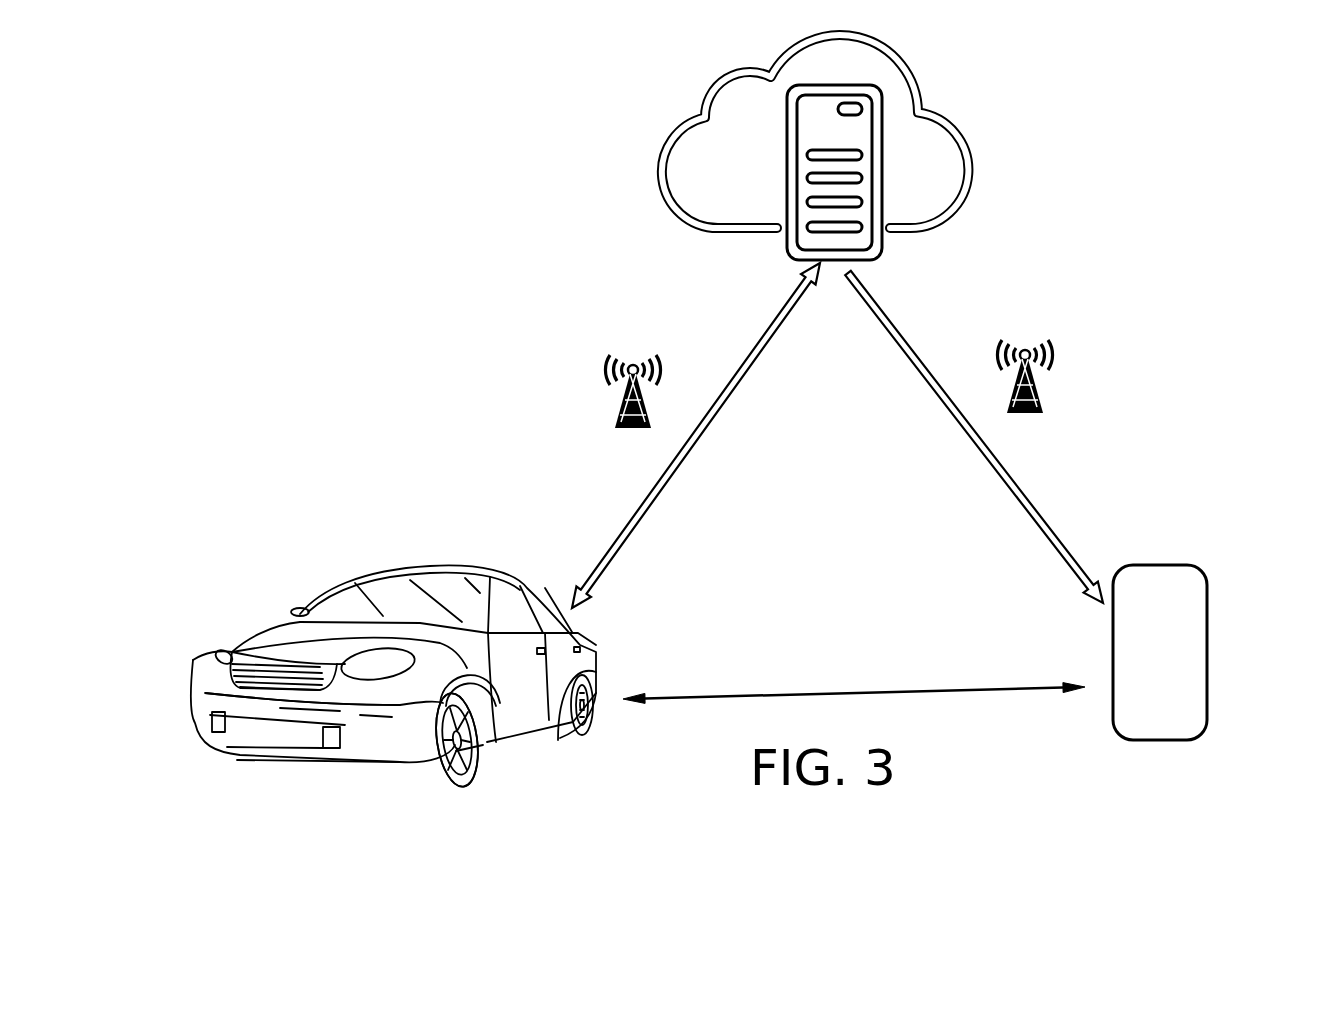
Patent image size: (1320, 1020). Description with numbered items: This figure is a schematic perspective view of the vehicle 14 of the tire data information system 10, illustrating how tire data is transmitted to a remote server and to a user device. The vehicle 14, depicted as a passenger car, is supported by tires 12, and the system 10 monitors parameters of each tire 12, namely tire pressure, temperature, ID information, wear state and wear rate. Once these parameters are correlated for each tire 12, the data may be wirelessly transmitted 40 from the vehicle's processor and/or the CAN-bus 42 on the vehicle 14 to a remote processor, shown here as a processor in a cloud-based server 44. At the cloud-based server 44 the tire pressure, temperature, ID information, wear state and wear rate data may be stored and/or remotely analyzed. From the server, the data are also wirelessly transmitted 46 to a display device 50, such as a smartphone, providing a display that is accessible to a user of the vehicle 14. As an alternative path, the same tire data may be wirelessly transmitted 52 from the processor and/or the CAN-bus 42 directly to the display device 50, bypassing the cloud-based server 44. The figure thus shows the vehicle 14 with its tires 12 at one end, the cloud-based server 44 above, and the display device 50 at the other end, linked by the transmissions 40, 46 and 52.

The tire data information system 10 is at (1155, 143).
The tire 12 is at (476, 761).
The vehicle 14 is at (603, 644).
The wireless transmission 40 is at (645, 497).
The CAN-bus 42 is at (222, 697).
The cloud-based server 44 is at (745, 238).
The wireless transmission 46 is at (1014, 482).
The display device 50 is at (1210, 640).
The wireless transmission 52 is at (828, 693).